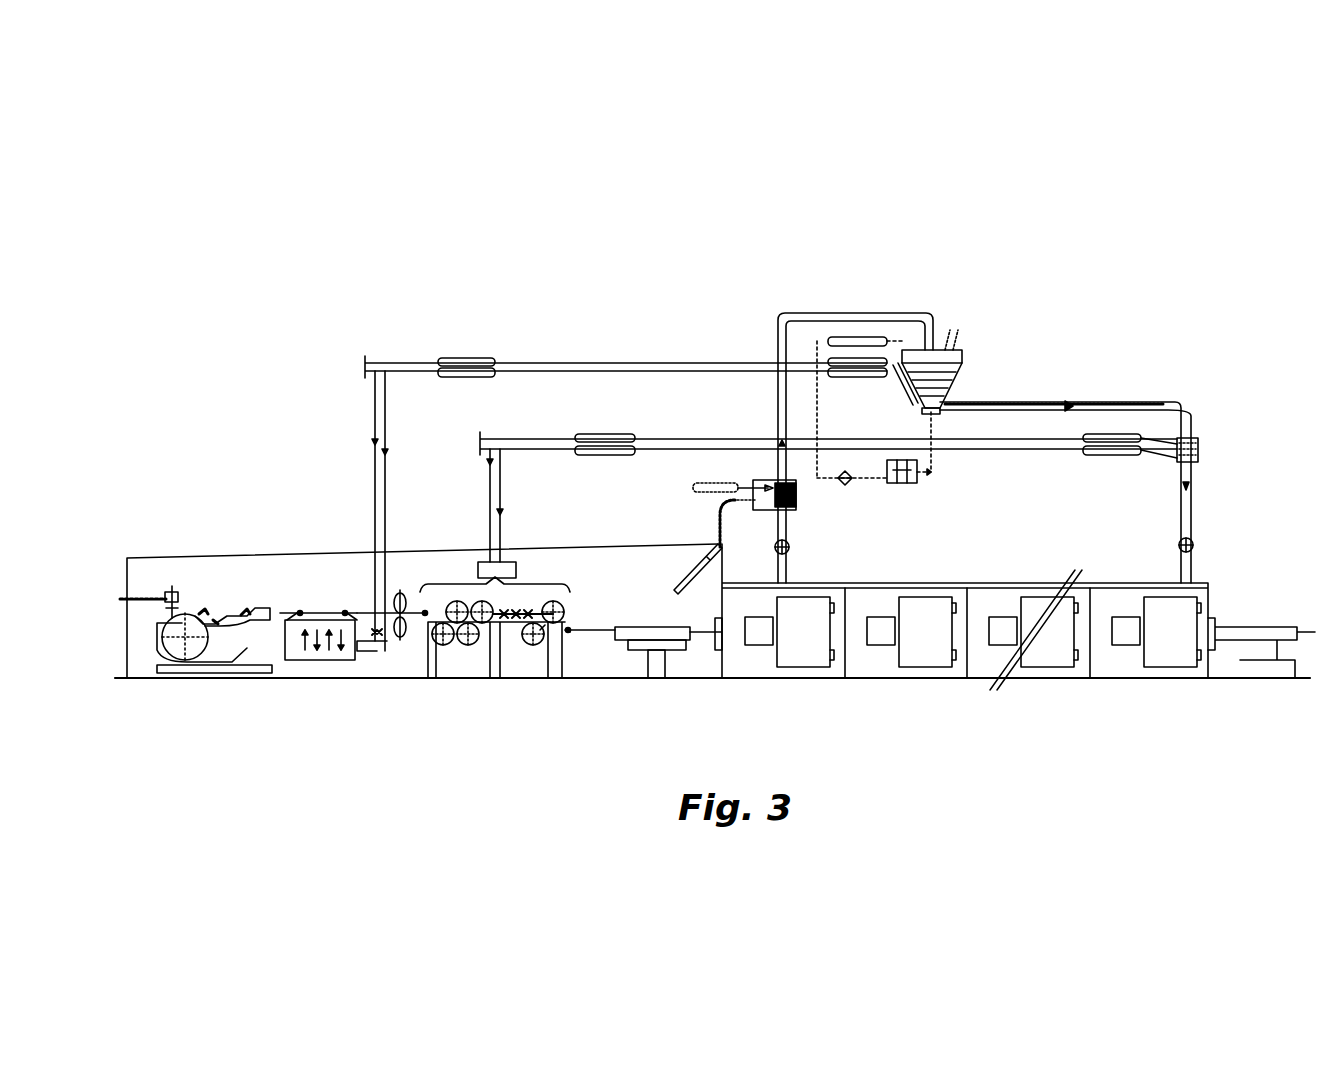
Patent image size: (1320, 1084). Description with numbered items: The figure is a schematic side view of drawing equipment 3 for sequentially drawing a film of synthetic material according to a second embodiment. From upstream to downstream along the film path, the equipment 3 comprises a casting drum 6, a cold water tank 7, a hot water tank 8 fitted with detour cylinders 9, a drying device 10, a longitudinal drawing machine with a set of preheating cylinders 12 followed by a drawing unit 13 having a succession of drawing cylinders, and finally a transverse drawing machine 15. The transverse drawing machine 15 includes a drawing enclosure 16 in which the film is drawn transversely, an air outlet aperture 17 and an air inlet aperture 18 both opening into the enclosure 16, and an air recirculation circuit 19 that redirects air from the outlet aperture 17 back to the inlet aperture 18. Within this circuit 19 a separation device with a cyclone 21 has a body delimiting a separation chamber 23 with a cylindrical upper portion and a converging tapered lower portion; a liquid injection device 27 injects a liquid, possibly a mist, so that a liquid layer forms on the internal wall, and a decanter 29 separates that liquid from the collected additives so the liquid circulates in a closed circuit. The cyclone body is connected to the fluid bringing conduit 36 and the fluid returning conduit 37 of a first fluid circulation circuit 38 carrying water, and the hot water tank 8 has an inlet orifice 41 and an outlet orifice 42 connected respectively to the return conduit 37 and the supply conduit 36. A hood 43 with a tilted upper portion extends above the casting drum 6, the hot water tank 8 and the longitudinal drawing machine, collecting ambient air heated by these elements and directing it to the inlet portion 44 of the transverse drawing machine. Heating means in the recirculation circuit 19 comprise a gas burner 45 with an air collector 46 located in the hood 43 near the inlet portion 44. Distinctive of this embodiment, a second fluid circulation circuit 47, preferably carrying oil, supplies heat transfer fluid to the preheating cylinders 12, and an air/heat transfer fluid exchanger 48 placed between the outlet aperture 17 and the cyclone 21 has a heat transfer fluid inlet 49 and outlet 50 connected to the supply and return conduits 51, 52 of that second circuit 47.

The equipment 3 is at (748, 285).
The casting drum 6 is at (172, 652).
The cold water tank 7 is at (232, 632).
The hot water tank 8 is at (293, 655).
The detour cylinders 9 is at (322, 655).
The drying device 10 is at (399, 595).
The preheating cylinders 12 is at (460, 645).
The drawing unit 13 is at (520, 645).
The transverse drawing machine 15 is at (800, 648).
The drawing enclosure 16 is at (885, 583).
The air outlet aperture 17 is at (1178, 578).
The air inlet aperture 18 is at (790, 583).
The air recirculation circuit 19 is at (1105, 405).
The separation device with a cyclone 21 is at (955, 365).
The separation chamber 23 is at (945, 350).
The liquid injection device 27 is at (926, 348).
The decanter 29 is at (918, 483).
The fluid bringing conduit 36 is at (386, 363).
The fluid returning conduit 37 is at (511, 372).
The first fluid circulation circuit 38 is at (538, 350).
The inlet orifice 41 is at (362, 632).
The outlet orifice 42 is at (362, 655).
The hood 43 is at (187, 558).
The inlet portion 44 is at (650, 632).
The gas burner 45 is at (764, 480).
The air collector 46 is at (690, 568).
The second fluid circulation circuit 47 is at (625, 428).
The air/heat transfer fluid exchanger 48 is at (1198, 447).
The heat transfer fluid inlet 49 is at (1188, 410).
The heat transfer fluid outlet 50 is at (1168, 462).
The fluid supply conduit 51 is at (502, 525).
The fluid return conduit 52 is at (523, 450).